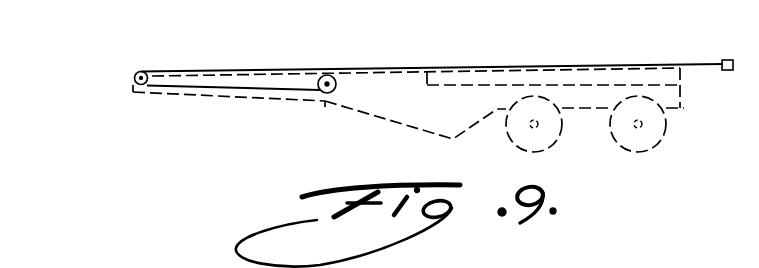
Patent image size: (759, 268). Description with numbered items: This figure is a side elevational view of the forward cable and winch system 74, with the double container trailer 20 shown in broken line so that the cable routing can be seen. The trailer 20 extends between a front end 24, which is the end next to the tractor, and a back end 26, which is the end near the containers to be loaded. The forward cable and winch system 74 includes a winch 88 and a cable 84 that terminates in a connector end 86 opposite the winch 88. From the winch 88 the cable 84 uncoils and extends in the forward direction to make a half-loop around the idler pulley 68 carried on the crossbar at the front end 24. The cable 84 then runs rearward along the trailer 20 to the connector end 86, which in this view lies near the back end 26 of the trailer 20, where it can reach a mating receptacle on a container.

The double container trailer 20 is at (325, 103).
The front end 24 is at (130, 86).
The back end 26 is at (684, 104).
The idler pulley 68 is at (141, 71).
The front cable and winch system 74 is at (349, 51).
The cable 84 is at (448, 64).
The connector end 86 is at (728, 60).
The winch 88 is at (334, 90).